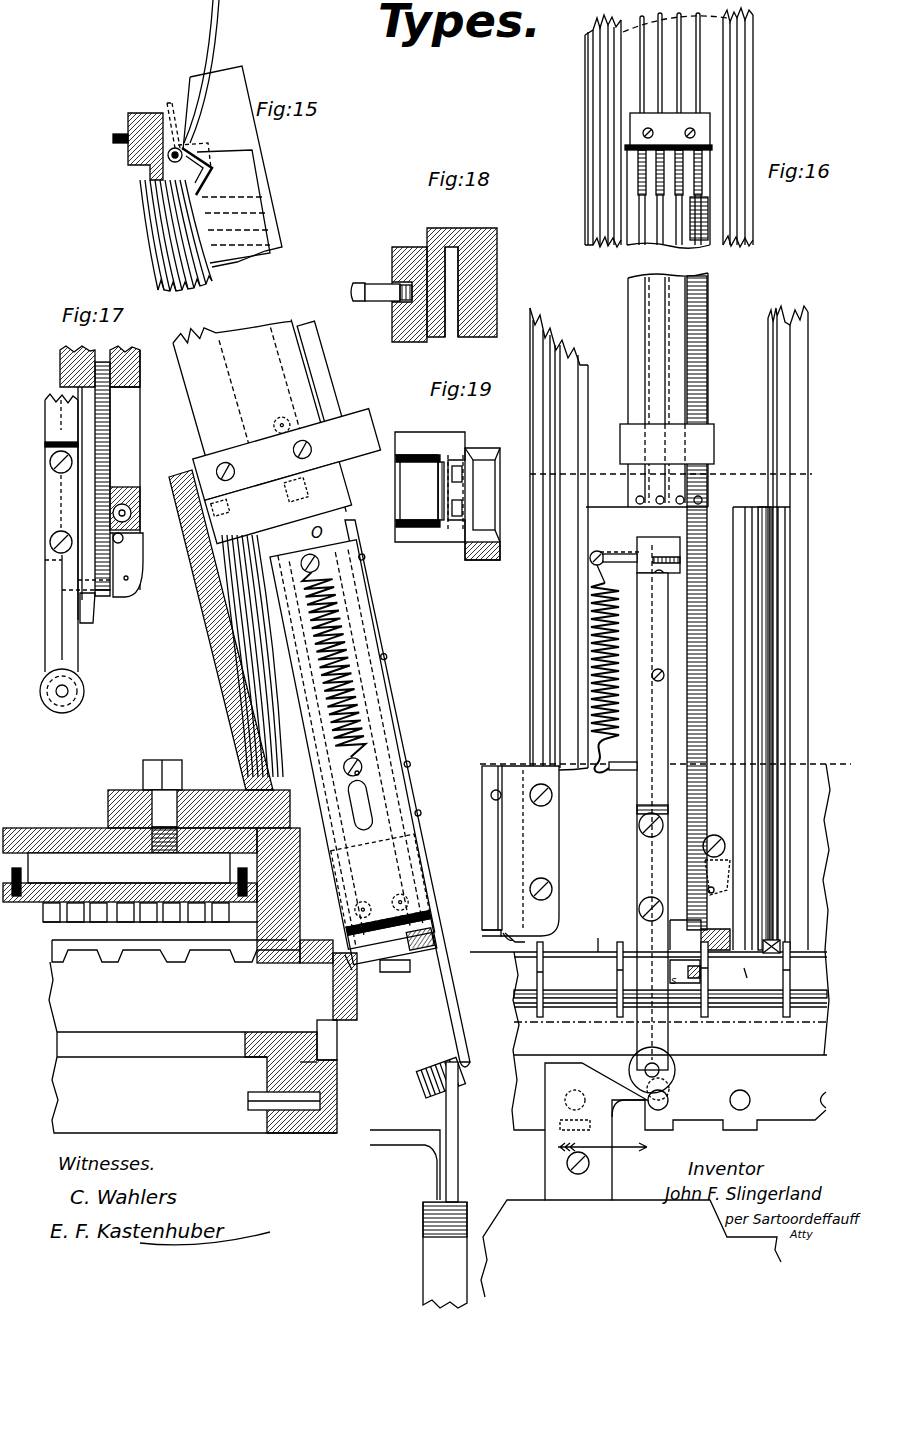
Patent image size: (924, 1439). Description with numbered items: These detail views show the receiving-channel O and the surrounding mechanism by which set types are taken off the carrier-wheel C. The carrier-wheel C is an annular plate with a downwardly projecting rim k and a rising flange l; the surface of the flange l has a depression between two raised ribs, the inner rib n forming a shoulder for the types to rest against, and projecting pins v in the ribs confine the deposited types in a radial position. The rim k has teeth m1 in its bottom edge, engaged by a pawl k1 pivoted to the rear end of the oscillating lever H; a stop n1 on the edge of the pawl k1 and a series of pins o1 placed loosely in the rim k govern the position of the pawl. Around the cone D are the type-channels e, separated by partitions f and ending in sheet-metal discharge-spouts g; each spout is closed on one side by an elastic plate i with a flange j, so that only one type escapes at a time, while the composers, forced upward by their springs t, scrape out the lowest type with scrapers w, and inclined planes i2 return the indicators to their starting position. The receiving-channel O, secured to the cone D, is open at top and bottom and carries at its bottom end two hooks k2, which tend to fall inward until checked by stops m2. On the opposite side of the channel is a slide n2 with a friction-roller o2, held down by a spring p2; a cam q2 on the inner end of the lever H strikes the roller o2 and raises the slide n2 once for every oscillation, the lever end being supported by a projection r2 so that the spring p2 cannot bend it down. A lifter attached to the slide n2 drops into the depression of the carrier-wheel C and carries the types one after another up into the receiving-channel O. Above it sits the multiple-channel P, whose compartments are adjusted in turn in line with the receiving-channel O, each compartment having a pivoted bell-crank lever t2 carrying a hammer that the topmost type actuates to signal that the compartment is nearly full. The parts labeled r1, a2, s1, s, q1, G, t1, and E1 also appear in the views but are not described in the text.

In FIG. 15, the bell-crank lever t2 is at (195, 149).
In FIG. 16, the bell-crank lever t2 is at (699, 97).
In FIG. 17, the bell-crank lever t2 is at (716, 865).
In FIG. 18, the slotted block r1 is at (462, 282).
In FIG. 18, the side block a2 is at (408, 294).
In FIG. 18, the spring t is at (384, 308).
In FIG. 18, the receiving-channel O is at (451, 297).
In FIG. 19, the receiving-channel O is at (430, 487).
In FIG. 17, the receiving-channel O is at (100, 483).
In FIG. 19, the pawl k1 is at (418, 455).
In FIG. 19, the hooks k2 is at (418, 526).
In FIG. 17, the hooks k2 is at (94, 578).
In FIG. 19, the pin s1 is at (452, 492).
In FIG. 17, the pin s1 is at (102, 604).
In FIG. 19, the rib n is at (482, 504).
In FIG. 17, the slide n2 is at (61, 533).
In FIG. 17, the friction-roller o2 is at (70, 691).
In FIG. 17, the stops m2 is at (133, 575).
In FIG. 17, the multiple-channel P is at (276, 417).
In FIG. 17, the cone D is at (226, 630).
In FIG. 17, the spring p2 is at (340, 655).
In FIG. 17, the pawl s is at (395, 970).
In FIG. 17, the stop n1 is at (352, 972).
In FIG. 17, the pins o1 is at (381, 814).
In FIG. 17, the cam q2 is at (453, 1132).
In FIG. 17, the rod end q1 is at (445, 1255).
In FIG. 17, the lever H is at (405, 1162).
In FIG. 17, the inclined planes i2 is at (168, 861).
In FIG. 17, the toothed plate G is at (171, 942).
In FIG. 17, the carrier-wheel C is at (203, 1043).
In FIG. 17, the rim k is at (305, 1074).
In FIG. 17, the teeth m1 is at (284, 1113).
In FIG. 17, the type-channels e is at (549, 539).
In FIG. 17, the partitions f is at (788, 628).
In FIG. 17, the discharge-spouts g is at (530, 851).
In FIG. 17, the elastic plate i is at (497, 853).
In FIG. 17, the flange j is at (492, 931).
In FIG. 17, the block t1 is at (700, 933).
In FIG. 17, the scrapers w is at (663, 972).
In FIG. 17, the projecting pins v is at (592, 941).
In FIG. 17, the type guides E1 is at (666, 974).
In FIG. 17, the rising flange l is at (748, 971).
In FIG. 17, the projection r2 is at (631, 1248).